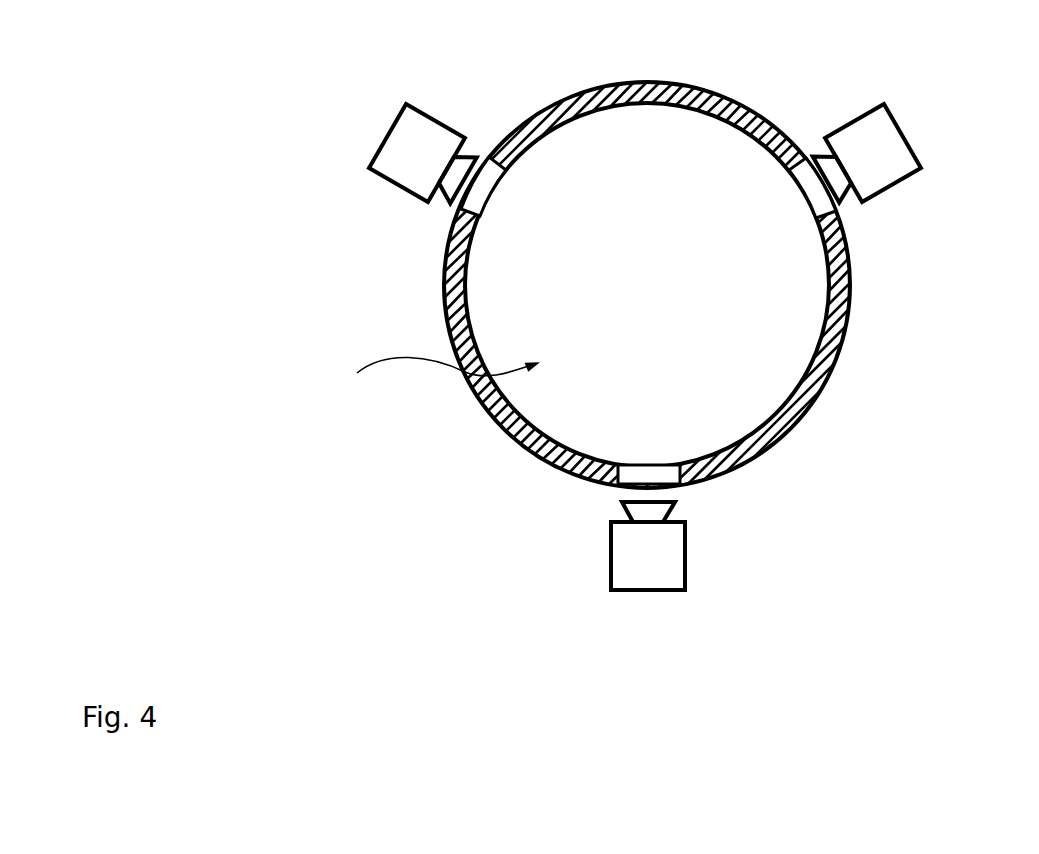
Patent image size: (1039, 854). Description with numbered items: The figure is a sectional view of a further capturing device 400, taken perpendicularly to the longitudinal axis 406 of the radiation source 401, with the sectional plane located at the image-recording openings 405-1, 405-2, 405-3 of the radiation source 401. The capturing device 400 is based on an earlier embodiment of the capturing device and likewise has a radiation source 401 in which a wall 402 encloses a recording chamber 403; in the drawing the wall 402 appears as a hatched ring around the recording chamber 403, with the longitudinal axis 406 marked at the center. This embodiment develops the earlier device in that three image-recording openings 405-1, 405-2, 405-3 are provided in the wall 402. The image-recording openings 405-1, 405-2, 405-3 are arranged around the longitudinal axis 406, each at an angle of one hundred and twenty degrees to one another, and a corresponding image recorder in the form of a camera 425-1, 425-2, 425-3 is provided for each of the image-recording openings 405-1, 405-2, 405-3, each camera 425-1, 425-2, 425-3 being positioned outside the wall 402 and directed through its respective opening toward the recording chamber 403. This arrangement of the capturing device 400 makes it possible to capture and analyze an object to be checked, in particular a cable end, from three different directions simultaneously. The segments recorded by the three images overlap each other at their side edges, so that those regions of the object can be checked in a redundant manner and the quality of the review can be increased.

The capturing device 400 is at (252, 606).
The radiation source 401 is at (790, 422).
The wall 402 is at (837, 327).
The recording chamber 403 is at (415, 378).
The image-recording opening 405-1 is at (492, 193).
The image-recording opening 405-2 is at (803, 200).
The image-recording opening 405-3 is at (642, 463).
The longitudinal axis 406 is at (645, 278).
The camera 425-1 is at (410, 107).
The camera 425-2 is at (908, 176).
The camera 425-3 is at (687, 588).